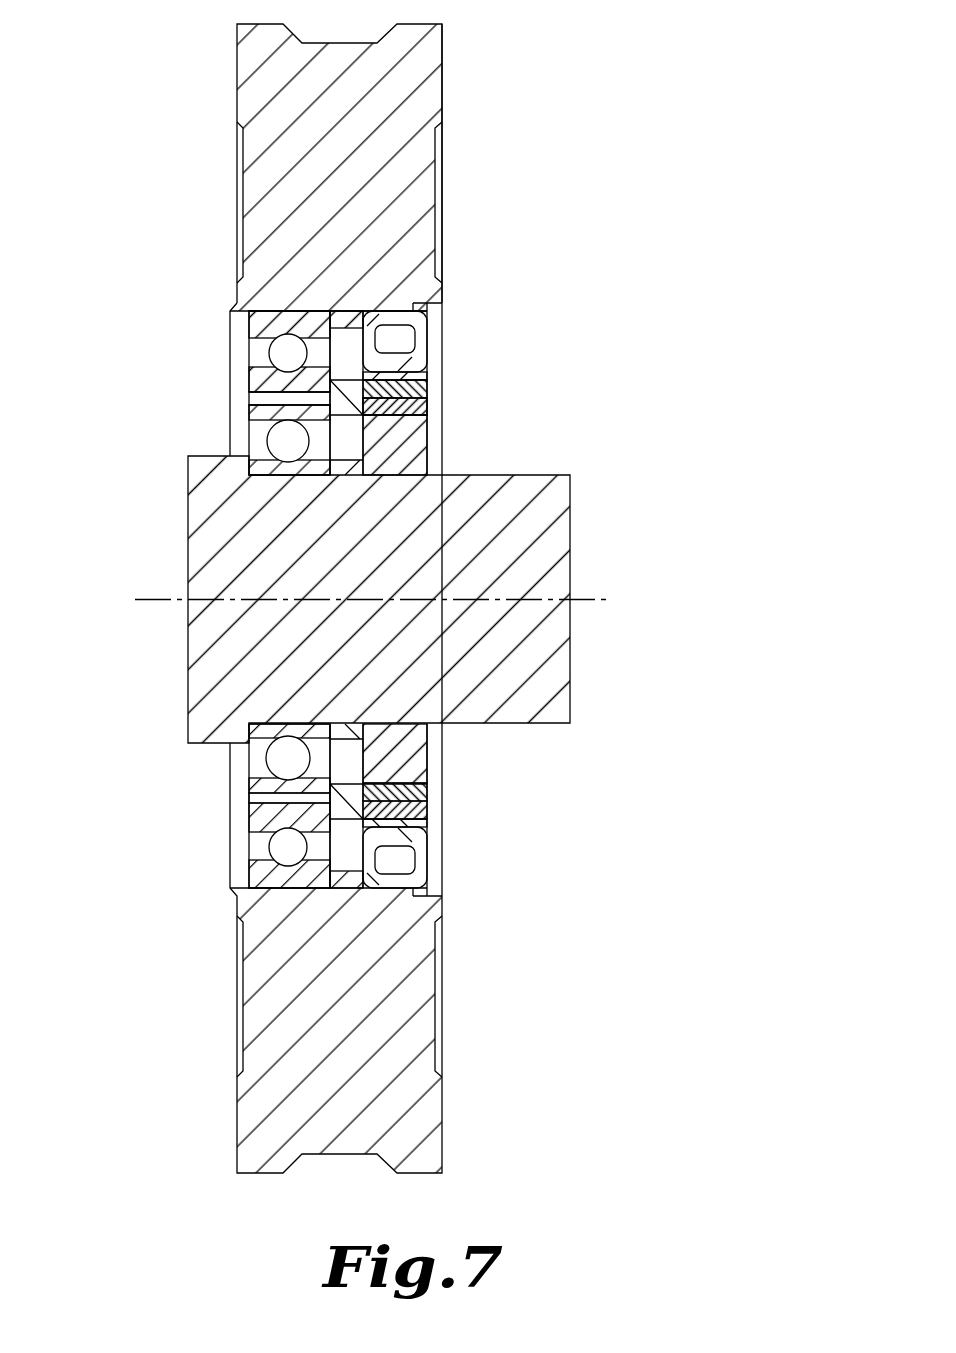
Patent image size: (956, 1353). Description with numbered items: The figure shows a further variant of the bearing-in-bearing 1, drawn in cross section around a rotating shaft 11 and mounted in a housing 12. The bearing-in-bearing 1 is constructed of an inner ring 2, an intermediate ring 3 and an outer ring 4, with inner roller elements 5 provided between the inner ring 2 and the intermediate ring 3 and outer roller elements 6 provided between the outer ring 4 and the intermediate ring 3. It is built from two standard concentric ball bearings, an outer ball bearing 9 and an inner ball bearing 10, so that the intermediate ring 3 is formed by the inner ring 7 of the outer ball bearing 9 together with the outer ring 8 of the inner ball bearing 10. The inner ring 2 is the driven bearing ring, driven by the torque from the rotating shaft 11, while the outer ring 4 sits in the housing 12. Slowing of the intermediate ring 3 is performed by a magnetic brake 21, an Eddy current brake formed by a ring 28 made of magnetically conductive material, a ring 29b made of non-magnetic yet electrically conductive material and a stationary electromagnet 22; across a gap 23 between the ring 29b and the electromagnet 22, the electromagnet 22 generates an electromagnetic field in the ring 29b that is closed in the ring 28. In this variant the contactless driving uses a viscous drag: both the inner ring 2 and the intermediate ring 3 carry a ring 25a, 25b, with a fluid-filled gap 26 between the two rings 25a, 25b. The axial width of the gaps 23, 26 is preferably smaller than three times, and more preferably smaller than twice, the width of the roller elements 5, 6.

The bearing-in-bearing 1 is at (534, 47).
The inner ring 2 is at (249, 470).
The intermediate ring 3 is at (249, 398).
The outer ring 4 is at (249, 318).
The inner roller elements 5 is at (249, 441).
The outer roller elements 6 is at (249, 350).
The inner ring of the outer ball bearing 7 is at (249, 378).
The outer ring of the inner ball bearing 8 is at (249, 418).
The outer ball bearing 9 is at (113, 290).
The inner ball bearing 10 is at (101, 397).
The rotating shaft 11 is at (553, 560).
The housing 12 is at (268, 108).
The magnetic brake 21 is at (470, 310).
The electromagnet 22 is at (422, 341).
The gap 23 is at (407, 373).
The ring 25a is at (418, 467).
The ring 25b is at (405, 407).
The gap 26 is at (408, 413).
The ring made of magnetically conductive material 28 is at (395, 406).
The ring made of non-magnetic yet electrically conductive material 29b is at (407, 392).